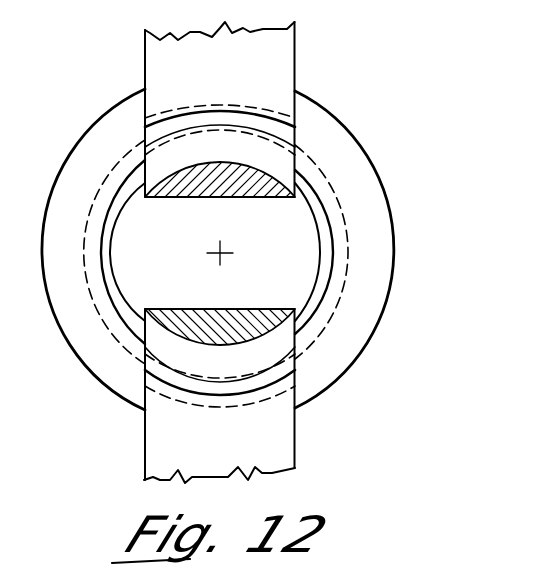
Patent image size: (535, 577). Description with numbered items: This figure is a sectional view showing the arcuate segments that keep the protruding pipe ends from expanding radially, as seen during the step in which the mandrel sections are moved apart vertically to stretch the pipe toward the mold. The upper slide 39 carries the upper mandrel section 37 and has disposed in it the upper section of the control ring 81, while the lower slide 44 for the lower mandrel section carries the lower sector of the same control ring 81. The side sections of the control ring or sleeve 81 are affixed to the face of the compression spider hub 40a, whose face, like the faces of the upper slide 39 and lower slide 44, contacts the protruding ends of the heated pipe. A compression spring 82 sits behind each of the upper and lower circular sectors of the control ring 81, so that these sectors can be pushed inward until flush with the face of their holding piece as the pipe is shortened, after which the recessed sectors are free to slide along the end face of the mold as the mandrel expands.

The upper mandrel section 37 is at (216, 252).
The upper slide 39 is at (220, 109).
The compression spider hub 40a is at (104, 114).
The lower slide 44 is at (219, 396).
The control ring 81 is at (268, 113).
The compression spring 82 is at (201, 108).